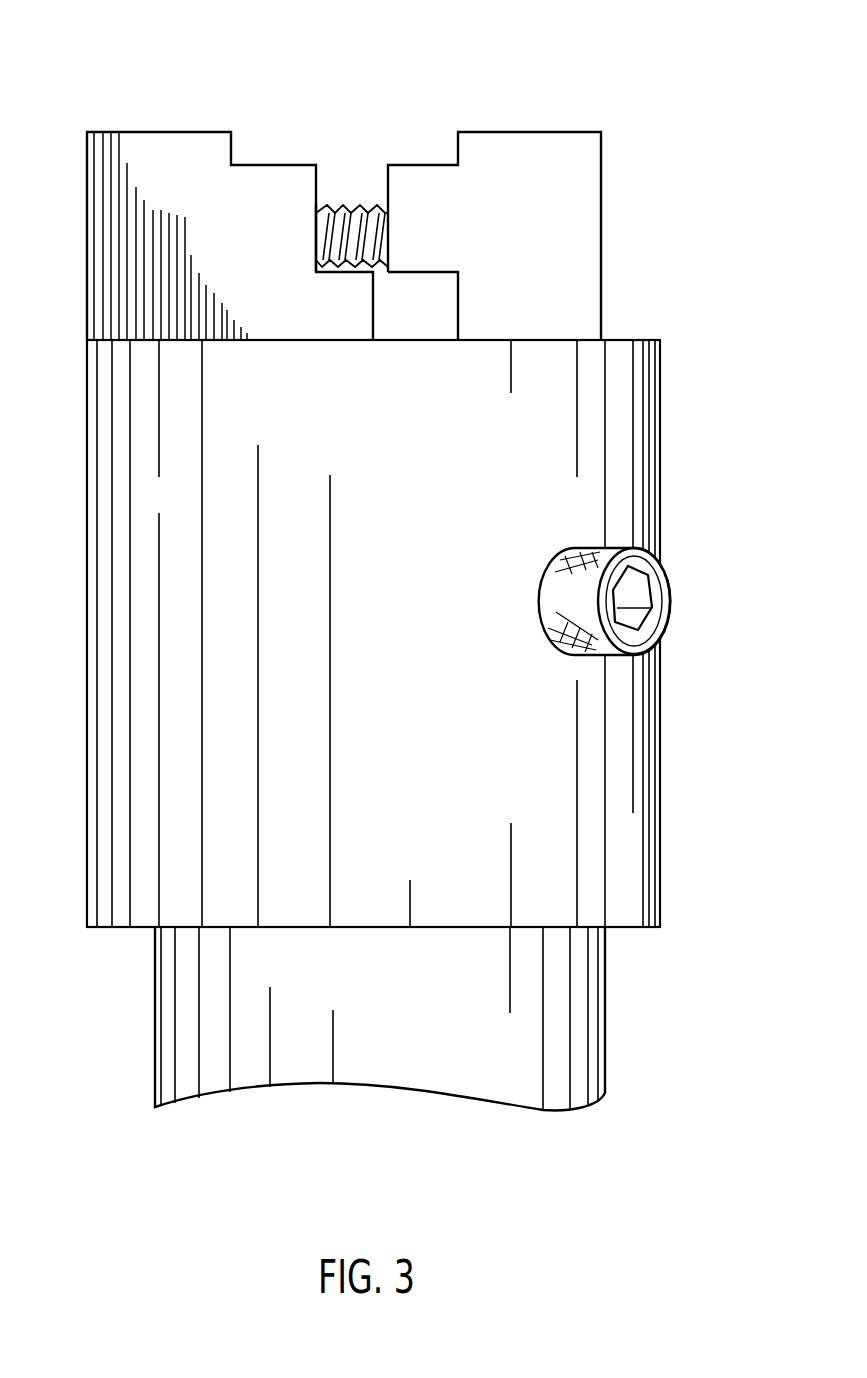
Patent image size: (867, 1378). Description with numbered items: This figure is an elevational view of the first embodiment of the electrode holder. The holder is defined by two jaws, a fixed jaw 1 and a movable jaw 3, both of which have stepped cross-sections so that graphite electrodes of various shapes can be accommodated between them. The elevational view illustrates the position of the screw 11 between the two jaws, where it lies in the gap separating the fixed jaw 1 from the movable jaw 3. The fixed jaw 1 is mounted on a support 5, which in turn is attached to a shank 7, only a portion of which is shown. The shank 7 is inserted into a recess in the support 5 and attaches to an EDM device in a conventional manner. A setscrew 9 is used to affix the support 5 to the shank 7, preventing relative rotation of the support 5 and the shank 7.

The fixed jaw 1 is at (188, 170).
The movable jaw 3 is at (550, 170).
The support 5 is at (625, 434).
The shank 7 is at (557, 998).
The setscrews 9 is at (660, 590).
The screw 11 is at (358, 200).